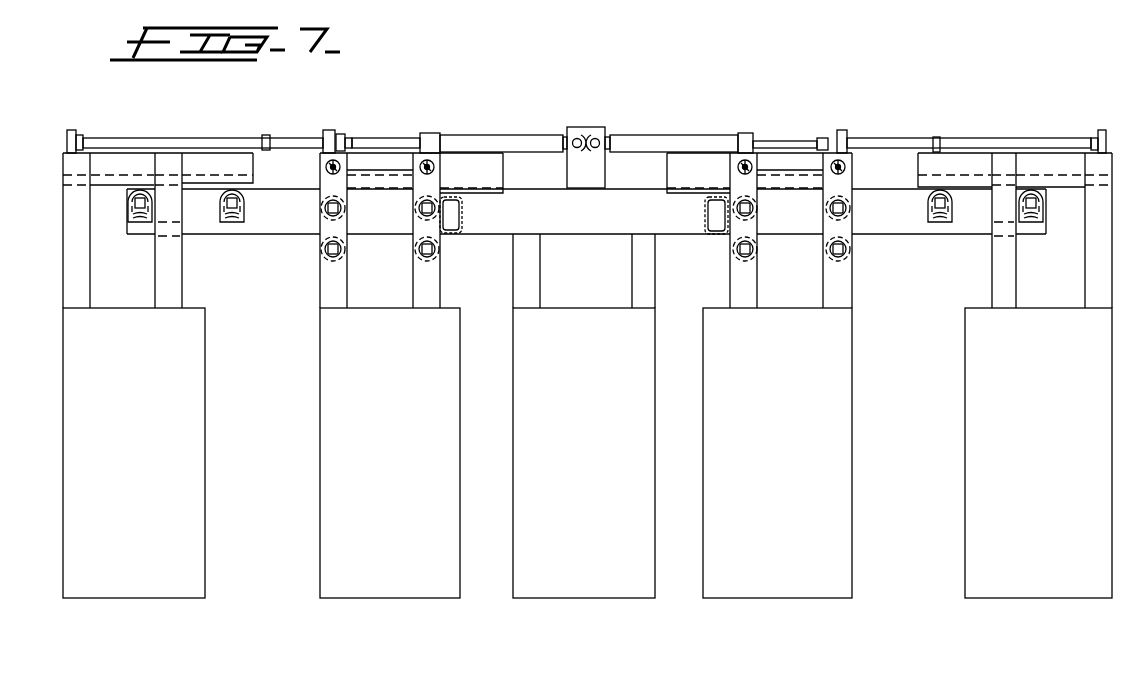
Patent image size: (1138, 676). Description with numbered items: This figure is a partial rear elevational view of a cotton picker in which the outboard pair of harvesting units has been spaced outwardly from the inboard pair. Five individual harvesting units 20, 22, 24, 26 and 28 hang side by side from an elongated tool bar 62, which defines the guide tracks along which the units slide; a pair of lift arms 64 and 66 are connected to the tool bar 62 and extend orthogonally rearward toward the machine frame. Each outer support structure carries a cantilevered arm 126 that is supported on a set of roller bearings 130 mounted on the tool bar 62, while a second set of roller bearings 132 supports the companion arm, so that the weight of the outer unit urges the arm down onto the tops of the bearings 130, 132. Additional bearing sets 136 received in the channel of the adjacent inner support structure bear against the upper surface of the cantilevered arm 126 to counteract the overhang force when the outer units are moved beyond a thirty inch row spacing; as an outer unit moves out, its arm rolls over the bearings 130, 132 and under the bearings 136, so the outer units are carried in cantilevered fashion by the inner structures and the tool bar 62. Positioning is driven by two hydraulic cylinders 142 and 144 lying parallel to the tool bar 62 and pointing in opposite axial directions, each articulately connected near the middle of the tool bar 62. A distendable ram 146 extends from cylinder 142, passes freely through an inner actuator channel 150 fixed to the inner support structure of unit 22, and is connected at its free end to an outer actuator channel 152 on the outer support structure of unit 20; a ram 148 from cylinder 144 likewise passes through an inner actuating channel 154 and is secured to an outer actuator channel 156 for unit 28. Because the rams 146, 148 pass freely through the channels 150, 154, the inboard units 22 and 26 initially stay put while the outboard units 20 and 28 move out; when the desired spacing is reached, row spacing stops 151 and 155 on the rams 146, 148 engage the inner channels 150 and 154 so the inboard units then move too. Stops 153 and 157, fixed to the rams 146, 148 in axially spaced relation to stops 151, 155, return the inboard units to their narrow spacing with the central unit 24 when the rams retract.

The harvesting unit 20 is at (132, 496).
The harvesting unit 22 is at (394, 496).
The harvesting unit 24 is at (590, 496).
The harvesting unit 26 is at (792, 496).
The harvesting unit 28 is at (1057, 496).
The tool bar 62 is at (593, 221).
The lift arm 64 is at (466, 216).
The lift arm 66 is at (705, 214).
The cantilevered arm 126 is at (274, 182).
The roller bearings 130 is at (125, 208).
The roller bearings 132 is at (221, 210).
The roller bearings 136 is at (326, 167).
The hydraulic cylinder 142 is at (505, 134).
The hydraulic cylinder 144 is at (702, 132).
The distendable ram 146 is at (194, 138).
The distendable ram 148 is at (962, 138).
The inner actuator channel 150 is at (329, 130).
The stop 151 is at (341, 134).
The outer actuator channel 152 is at (72, 130).
The stop 153 is at (267, 135).
The inner actuating channel 154 is at (844, 130).
The stop 155 is at (823, 137).
The outer actuator channel 156 is at (1104, 130).
The stop 157 is at (936, 137).